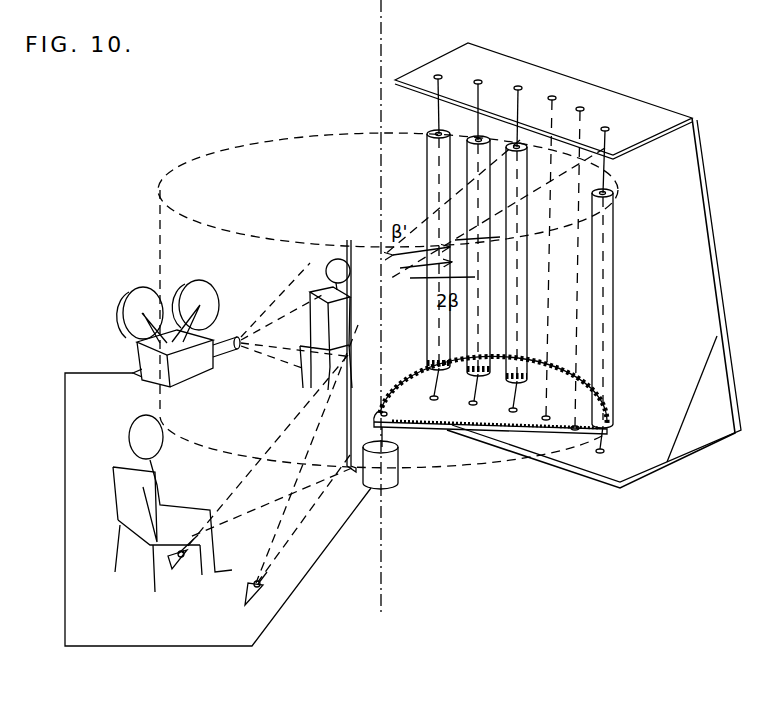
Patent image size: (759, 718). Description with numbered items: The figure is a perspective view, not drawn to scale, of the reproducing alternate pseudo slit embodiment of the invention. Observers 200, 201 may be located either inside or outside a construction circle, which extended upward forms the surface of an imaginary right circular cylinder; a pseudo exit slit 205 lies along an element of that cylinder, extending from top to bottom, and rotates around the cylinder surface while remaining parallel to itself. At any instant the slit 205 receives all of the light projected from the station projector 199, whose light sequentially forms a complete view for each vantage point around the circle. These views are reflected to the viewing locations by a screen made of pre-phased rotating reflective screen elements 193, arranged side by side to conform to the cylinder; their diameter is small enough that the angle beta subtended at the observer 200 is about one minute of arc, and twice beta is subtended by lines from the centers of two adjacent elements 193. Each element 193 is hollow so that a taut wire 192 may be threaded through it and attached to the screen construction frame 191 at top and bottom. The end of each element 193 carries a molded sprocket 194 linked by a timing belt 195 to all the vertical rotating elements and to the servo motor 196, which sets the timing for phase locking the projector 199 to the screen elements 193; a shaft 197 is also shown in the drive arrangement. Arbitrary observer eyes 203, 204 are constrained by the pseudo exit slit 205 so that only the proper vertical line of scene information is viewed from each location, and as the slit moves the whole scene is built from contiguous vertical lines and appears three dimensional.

The screen construction frame 191 is at (621, 101).
The taut wire 192 is at (505, 119).
The rotating screen element 193 is at (467, 187).
The molded sprocket 194 is at (477, 376).
The timing belt 195 is at (428, 432).
The servo motor 196 is at (390, 488).
The drive shaft 197 is at (386, 405).
The station projector 199 is at (138, 363).
The observer 200 is at (330, 259).
The observer 201 is at (133, 423).
The observer eye 203 is at (173, 562).
The observer eye 204 is at (252, 597).
The pseudo exit slit 205 is at (347, 422).